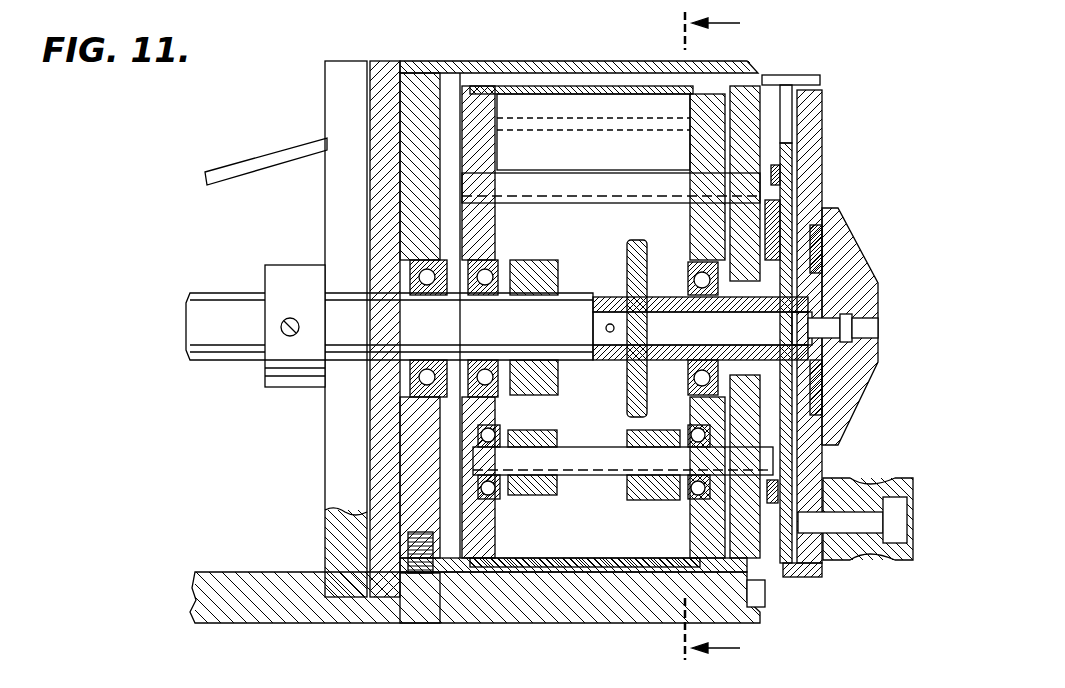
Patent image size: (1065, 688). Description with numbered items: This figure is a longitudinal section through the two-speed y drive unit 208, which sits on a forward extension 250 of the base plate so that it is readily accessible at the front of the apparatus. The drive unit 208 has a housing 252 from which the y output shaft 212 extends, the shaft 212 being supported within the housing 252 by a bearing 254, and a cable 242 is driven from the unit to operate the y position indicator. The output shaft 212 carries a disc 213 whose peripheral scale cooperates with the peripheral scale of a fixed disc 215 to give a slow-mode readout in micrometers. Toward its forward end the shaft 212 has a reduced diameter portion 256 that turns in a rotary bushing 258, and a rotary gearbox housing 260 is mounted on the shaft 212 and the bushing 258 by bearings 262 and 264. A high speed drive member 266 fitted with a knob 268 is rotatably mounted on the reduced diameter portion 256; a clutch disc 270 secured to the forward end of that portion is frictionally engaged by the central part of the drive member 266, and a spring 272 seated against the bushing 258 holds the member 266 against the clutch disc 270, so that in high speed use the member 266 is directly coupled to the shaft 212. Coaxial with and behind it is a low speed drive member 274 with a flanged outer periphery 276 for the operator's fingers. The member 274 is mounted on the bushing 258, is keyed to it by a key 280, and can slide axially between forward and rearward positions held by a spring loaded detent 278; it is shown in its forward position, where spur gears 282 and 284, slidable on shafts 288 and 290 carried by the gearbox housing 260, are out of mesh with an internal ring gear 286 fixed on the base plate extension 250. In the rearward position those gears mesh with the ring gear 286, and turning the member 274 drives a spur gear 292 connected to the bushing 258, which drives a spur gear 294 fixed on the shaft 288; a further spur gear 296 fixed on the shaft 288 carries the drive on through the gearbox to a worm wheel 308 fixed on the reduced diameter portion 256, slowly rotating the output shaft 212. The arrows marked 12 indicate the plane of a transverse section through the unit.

The section line 12 is at (731, 336).
The two-speed y drive unit 208 is at (292, 213).
The y unit output shaft 212 is at (250, 352).
The disc 213 is at (345, 62).
The fixed disc 215 is at (377, 66).
The cable 242 is at (212, 175).
The forward extension of the base plate 250 is at (218, 615).
The housing 252 is at (435, 62).
The bearing 254 is at (405, 389).
The reduced diameter portion 256 is at (795, 325).
The rotary bushing 258 is at (712, 302).
The rotary gearbox housing 260 is at (614, 85).
The bearing 262 is at (485, 258).
The bearing 264 is at (692, 265).
The high speed drive member 266 is at (822, 100).
The knob 268 is at (896, 560).
The clutch disc 270 is at (862, 280).
The spring 272 is at (855, 350).
The low speed drive member 274 is at (775, 490).
The flanged outer periphery 276 is at (792, 72).
The spring loaded detent 278 is at (775, 252).
The key 280 is at (836, 335).
The spur gear 282 is at (808, 525).
The spur gear 284 is at (790, 178).
The internal ring gear 286 is at (758, 545).
The shaft 288 is at (585, 462).
The shaft 290 is at (563, 185).
The spur gear 292 is at (658, 382).
The spur gear 294 is at (668, 505).
The spur gear 296 is at (522, 498).
The worm wheel 308 is at (620, 268).